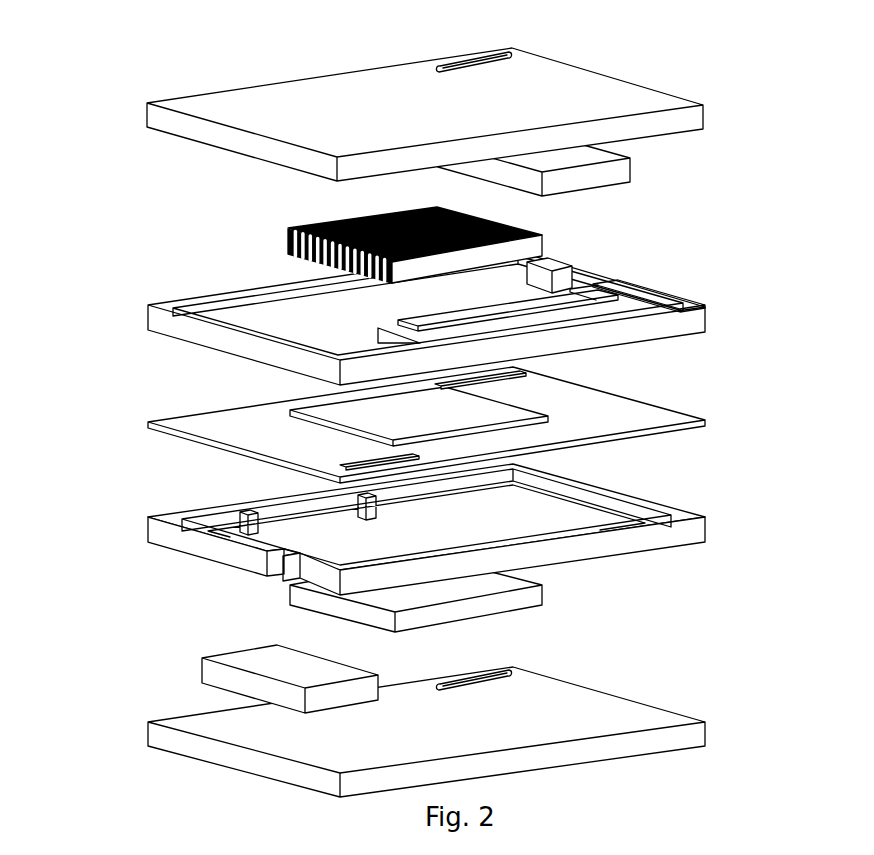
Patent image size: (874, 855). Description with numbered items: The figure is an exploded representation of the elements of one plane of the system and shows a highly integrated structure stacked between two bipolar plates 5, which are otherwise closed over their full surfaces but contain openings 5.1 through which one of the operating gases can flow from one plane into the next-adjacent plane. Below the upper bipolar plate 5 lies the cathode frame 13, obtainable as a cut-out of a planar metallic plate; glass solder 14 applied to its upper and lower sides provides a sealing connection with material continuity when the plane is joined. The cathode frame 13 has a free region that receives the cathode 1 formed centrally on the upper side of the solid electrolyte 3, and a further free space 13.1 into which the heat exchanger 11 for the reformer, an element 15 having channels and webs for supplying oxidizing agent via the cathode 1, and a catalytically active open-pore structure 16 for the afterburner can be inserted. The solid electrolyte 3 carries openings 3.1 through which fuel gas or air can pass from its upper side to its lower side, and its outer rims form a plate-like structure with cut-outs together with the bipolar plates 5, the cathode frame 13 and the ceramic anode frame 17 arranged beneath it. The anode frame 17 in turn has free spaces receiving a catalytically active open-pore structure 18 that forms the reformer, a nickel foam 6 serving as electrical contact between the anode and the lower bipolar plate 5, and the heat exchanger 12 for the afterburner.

The cathode 1 is at (403, 415).
The solid electrolyte 3 is at (620, 412).
The openings 3.1 is at (518, 375).
The bipolar plates 5 is at (593, 92).
The openings 5.1 is at (500, 58).
The nickel foam 6 is at (479, 608).
The heat exchanger 11 is at (200, 320).
The heat exchanger 12 is at (565, 506).
The cathode frame 13 is at (682, 318).
The free space 13.1 is at (320, 330).
The glass solder 14 is at (642, 301).
The element having channels and webs 15 is at (520, 249).
The catalytically active open-pore structure 16 is at (600, 173).
The anode frame 17 is at (682, 530).
The open-pore structure 18 is at (283, 659).